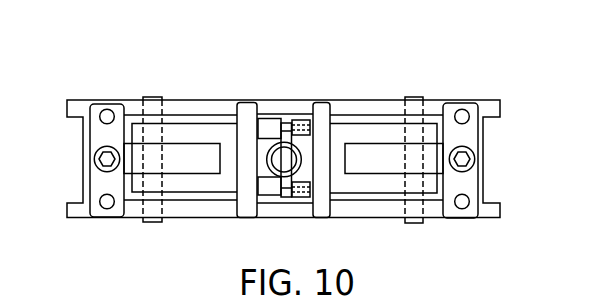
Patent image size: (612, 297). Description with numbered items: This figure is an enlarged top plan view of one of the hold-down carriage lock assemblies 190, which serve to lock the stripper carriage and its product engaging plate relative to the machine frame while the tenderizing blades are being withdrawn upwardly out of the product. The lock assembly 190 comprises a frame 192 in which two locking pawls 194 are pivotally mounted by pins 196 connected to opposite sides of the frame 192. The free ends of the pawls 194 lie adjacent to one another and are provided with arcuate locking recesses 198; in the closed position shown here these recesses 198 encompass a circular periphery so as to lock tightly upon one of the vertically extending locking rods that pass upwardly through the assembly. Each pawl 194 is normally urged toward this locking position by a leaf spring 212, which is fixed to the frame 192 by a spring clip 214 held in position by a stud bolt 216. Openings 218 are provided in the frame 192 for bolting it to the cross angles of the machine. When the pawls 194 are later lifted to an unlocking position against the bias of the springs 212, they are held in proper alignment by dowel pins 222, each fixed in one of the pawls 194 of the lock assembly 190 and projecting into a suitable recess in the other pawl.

The lock assembly 190 is at (387, 100).
The frame 192 is at (220, 210).
The locking pawl 194 is at (138, 128).
The pin 196 is at (145, 223).
The arcuate locking recess 198 is at (268, 120).
The leaf spring 212 is at (176, 143).
The spring clip 214 is at (97, 145).
The stud bolt 216 is at (466, 163).
The opening 218 is at (463, 115).
The dowel pin 222 is at (283, 121).